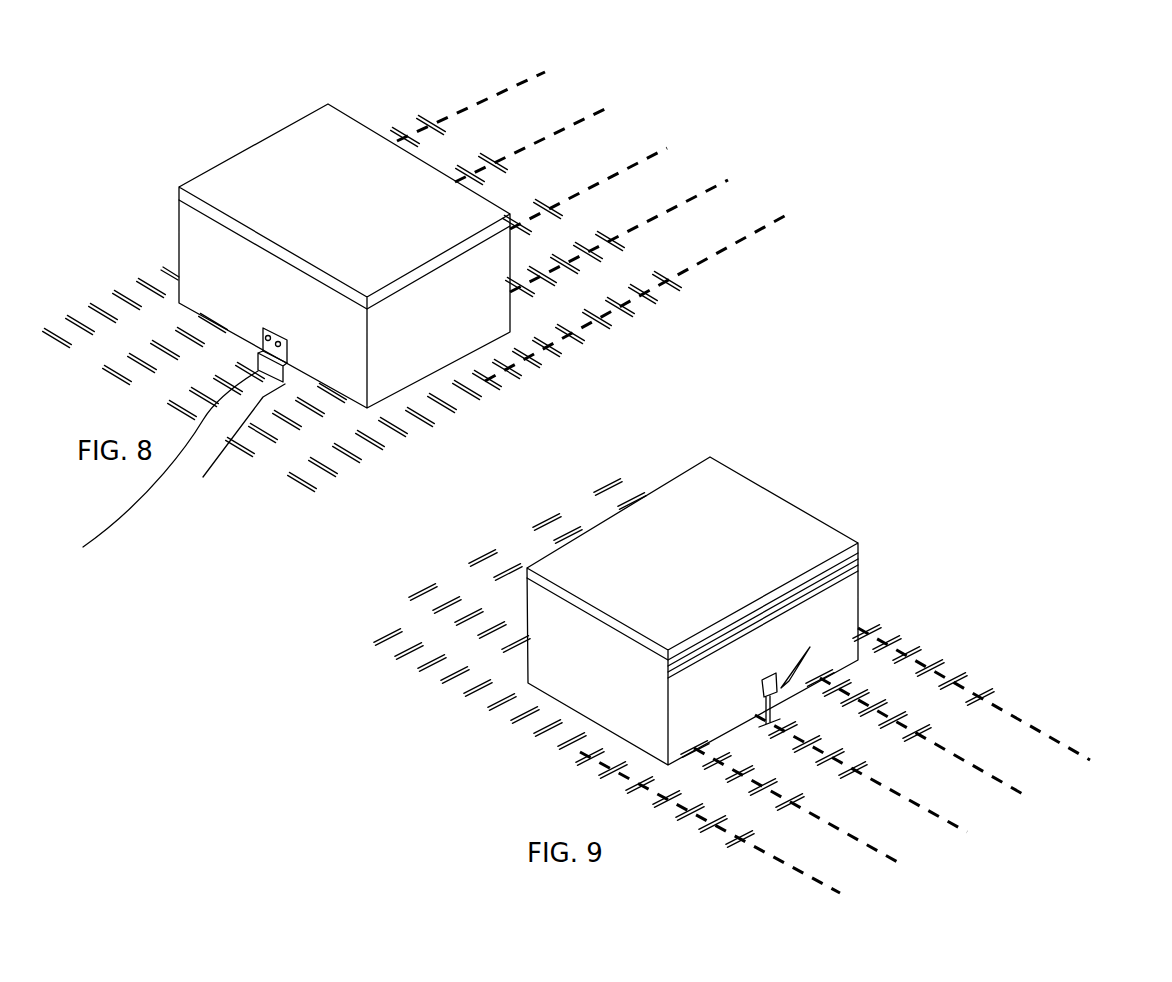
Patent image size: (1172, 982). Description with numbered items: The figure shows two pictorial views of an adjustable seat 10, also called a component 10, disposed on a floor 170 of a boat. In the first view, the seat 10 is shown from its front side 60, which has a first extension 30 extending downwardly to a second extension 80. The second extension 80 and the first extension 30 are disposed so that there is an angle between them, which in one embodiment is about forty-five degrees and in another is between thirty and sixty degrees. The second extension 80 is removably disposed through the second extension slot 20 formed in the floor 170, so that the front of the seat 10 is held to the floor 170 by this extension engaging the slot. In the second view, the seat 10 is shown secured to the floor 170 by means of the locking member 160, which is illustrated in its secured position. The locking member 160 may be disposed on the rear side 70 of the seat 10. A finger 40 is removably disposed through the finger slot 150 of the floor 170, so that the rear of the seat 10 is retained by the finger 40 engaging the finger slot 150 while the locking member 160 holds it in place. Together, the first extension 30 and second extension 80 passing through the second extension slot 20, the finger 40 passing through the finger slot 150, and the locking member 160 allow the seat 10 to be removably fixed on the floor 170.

In FIG. 8, the seat 10 is at (273, 197).
In FIG. 9, the seat 10 is at (767, 525).
In FIG. 8, the second extension slot 20 is at (300, 481).
In FIG. 8, the first extension 30 is at (266, 327).
In FIG. 9, the finger 40 is at (775, 700).
In FIG. 8, the front side 60 is at (212, 260).
In FIG. 9, the rear side 70 is at (820, 617).
In FIG. 8, the second extension 80 is at (166, 477).
In FIG. 9, the finger slot 150 is at (783, 707).
In FIG. 9, the locking member 160 is at (777, 693).
In FIG. 8, the floor 170 is at (147, 326).